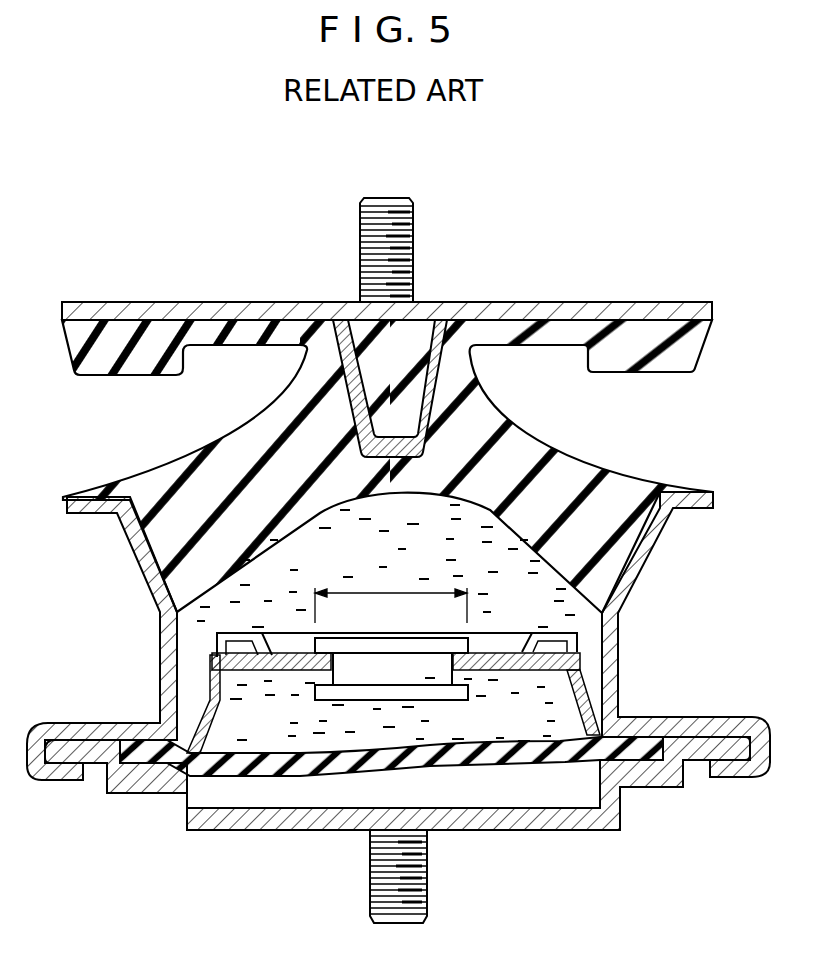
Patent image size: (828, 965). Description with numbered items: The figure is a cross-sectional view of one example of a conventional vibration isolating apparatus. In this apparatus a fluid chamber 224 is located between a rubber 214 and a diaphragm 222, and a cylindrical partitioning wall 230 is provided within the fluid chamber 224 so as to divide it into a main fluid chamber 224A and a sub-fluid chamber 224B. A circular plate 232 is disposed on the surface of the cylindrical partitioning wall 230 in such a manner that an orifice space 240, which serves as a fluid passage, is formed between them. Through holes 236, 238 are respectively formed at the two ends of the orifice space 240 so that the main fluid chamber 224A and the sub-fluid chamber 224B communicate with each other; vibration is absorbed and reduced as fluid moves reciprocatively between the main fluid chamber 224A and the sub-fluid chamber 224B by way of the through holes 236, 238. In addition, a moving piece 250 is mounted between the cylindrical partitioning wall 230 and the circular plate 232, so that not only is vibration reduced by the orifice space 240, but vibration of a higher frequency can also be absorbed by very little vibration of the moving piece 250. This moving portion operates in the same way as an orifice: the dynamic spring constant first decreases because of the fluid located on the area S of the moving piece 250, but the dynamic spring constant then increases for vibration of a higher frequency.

The rubber 214 is at (543, 433).
The diaphragm 222 is at (590, 767).
The fluid chamber 224 is at (210, 614).
The main fluid chamber 224A is at (366, 568).
The sub-fluid chamber 224B is at (512, 733).
The cylindrical partitioning wall 230 is at (578, 683).
The circular plate 232 is at (570, 648).
The through hole 236 is at (537, 631).
The through hole 238 is at (237, 674).
The orifice space 240 is at (217, 650).
The moving piece 250 is at (347, 647).
The area S is at (377, 593).